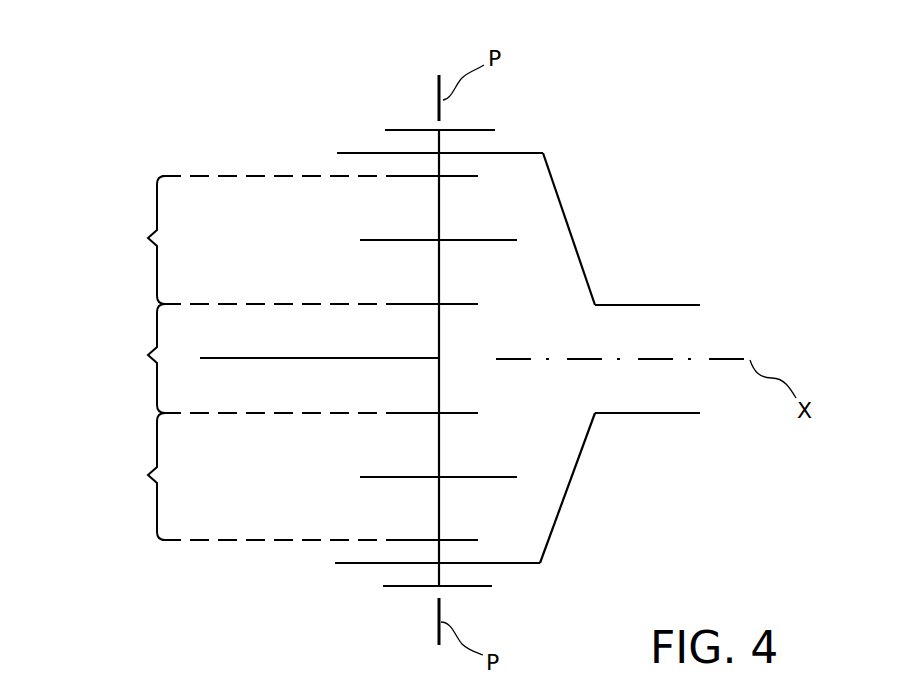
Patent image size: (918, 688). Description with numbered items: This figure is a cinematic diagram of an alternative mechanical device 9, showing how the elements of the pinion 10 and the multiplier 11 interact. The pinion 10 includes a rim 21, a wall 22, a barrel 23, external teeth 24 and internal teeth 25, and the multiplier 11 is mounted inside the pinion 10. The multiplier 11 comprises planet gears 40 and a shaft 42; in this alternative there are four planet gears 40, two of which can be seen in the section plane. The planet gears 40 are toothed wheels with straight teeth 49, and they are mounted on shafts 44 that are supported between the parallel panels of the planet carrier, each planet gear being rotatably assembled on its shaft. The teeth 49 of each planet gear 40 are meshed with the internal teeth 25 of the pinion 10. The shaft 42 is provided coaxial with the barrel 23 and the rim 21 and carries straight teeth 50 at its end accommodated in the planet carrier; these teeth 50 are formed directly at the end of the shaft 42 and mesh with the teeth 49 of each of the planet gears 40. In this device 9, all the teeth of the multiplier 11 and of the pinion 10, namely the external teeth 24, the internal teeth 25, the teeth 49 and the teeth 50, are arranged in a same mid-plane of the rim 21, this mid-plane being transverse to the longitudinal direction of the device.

The mechanical device 9 is at (345, 82).
The pinion 10 is at (353, 578).
The multiplier 11 is at (116, 522).
The rim 21 is at (527, 564).
The wall 22 is at (570, 487).
The barrel 23 is at (620, 414).
The external teeth 24 is at (473, 130).
The internal teeth 25 is at (456, 176).
The planet gears 40 is at (298, 358).
The shaft 42 is at (343, 357).
The shafts 44 is at (495, 240).
The straight teeth 49 is at (456, 176).
The straight teeth 50 is at (455, 306).